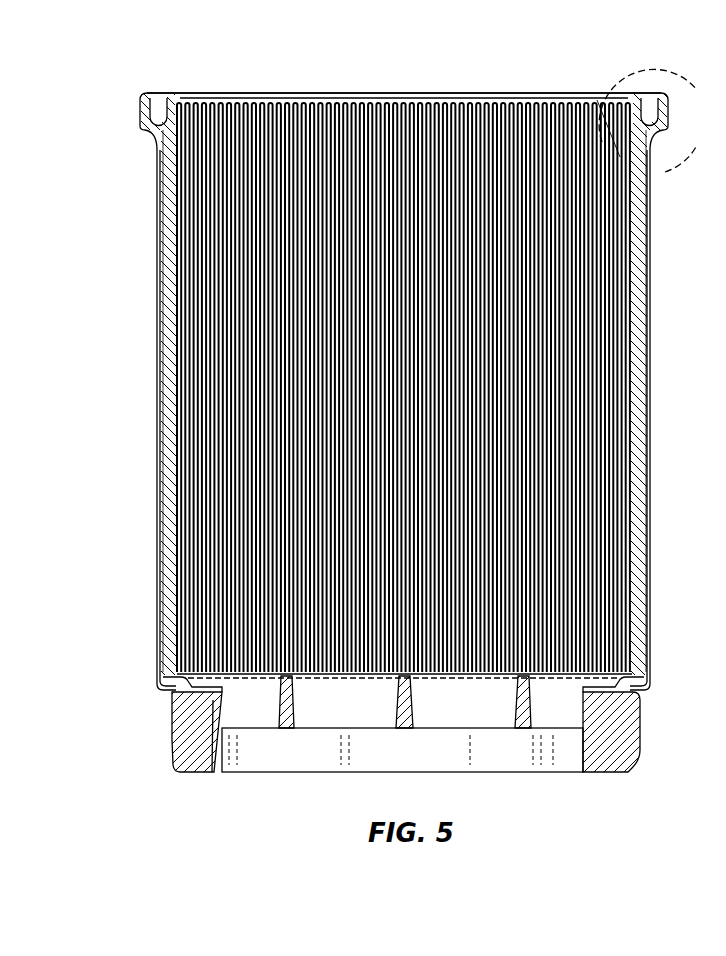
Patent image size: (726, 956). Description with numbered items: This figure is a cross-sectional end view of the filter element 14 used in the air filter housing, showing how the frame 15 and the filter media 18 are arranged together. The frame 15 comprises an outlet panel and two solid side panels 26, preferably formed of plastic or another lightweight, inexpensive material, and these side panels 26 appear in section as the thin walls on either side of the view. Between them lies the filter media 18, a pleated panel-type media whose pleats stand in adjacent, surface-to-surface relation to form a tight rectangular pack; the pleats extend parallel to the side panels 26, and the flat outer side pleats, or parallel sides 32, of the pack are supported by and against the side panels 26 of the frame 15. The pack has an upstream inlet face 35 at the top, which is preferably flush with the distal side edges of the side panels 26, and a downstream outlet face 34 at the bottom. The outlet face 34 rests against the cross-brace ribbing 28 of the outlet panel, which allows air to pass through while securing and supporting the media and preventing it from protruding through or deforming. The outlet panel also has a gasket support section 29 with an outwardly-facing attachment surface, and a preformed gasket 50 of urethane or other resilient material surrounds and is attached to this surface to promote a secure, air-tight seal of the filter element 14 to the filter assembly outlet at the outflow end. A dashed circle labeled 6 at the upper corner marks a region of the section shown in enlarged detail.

The filter element 14 is at (128, 170).
The frame 15 is at (368, 364).
The filter media 18 is at (497, 100).
The upstream inlet face 35 is at (378, 102).
The side panels 26 is at (157, 352).
The parallel sides 32 is at (177, 403).
The preformed gasket 50 is at (172, 728).
The gasket support section 29 is at (212, 740).
The cross-brace ribbing 28 is at (487, 707).
The downstream outlet face 34 is at (317, 676).
The detail view indicator 6 is at (690, 86).